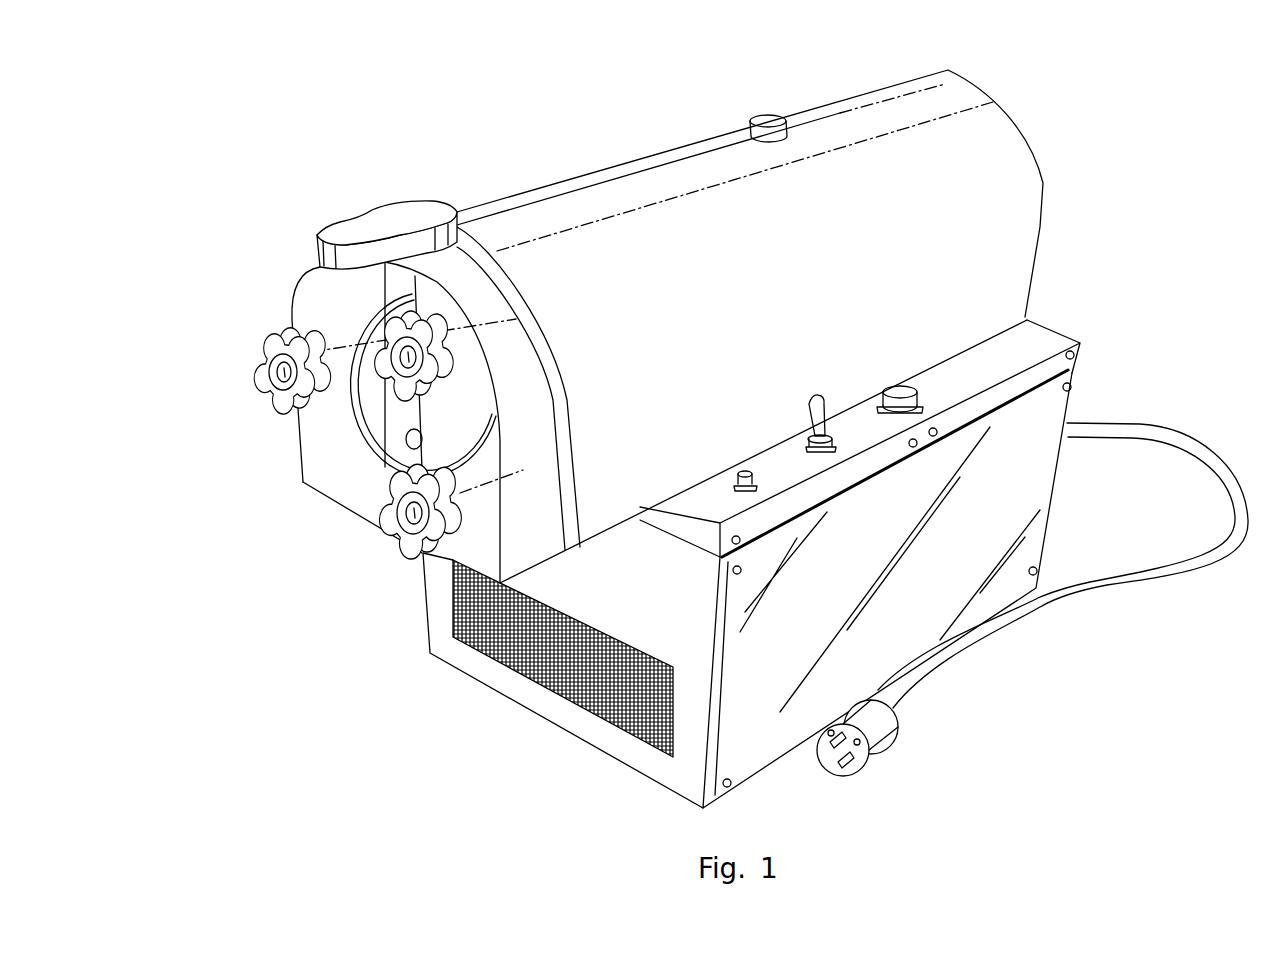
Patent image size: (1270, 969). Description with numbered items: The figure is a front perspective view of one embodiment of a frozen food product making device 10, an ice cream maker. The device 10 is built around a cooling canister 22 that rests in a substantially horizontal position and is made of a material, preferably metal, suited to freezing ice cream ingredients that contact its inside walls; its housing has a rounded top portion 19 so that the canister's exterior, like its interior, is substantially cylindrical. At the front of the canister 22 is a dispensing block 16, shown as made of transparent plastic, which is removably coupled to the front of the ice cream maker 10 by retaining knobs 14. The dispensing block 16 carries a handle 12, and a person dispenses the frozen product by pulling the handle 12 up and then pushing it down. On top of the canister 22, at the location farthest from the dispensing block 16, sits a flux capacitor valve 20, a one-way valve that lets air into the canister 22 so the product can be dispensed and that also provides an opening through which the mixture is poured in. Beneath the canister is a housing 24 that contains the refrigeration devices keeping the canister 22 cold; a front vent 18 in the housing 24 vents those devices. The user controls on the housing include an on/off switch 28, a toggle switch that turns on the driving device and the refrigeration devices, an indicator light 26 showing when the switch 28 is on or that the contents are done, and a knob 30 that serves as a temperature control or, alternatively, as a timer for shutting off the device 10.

The frozen food product making device 10 is at (424, 153).
The handle 12 is at (378, 216).
The retaining knobs 14 is at (256, 352).
The dispensing block 16 is at (300, 484).
The front vent 18 is at (500, 660).
The rounded top portion 19 is at (645, 152).
The flux capacitor valve 20 is at (764, 112).
The cooling canister 22 is at (1013, 187).
The housing 24 is at (1057, 415).
The indicator light 26 is at (745, 470).
The on/off switch 28 is at (815, 398).
The knob 30 is at (899, 387).